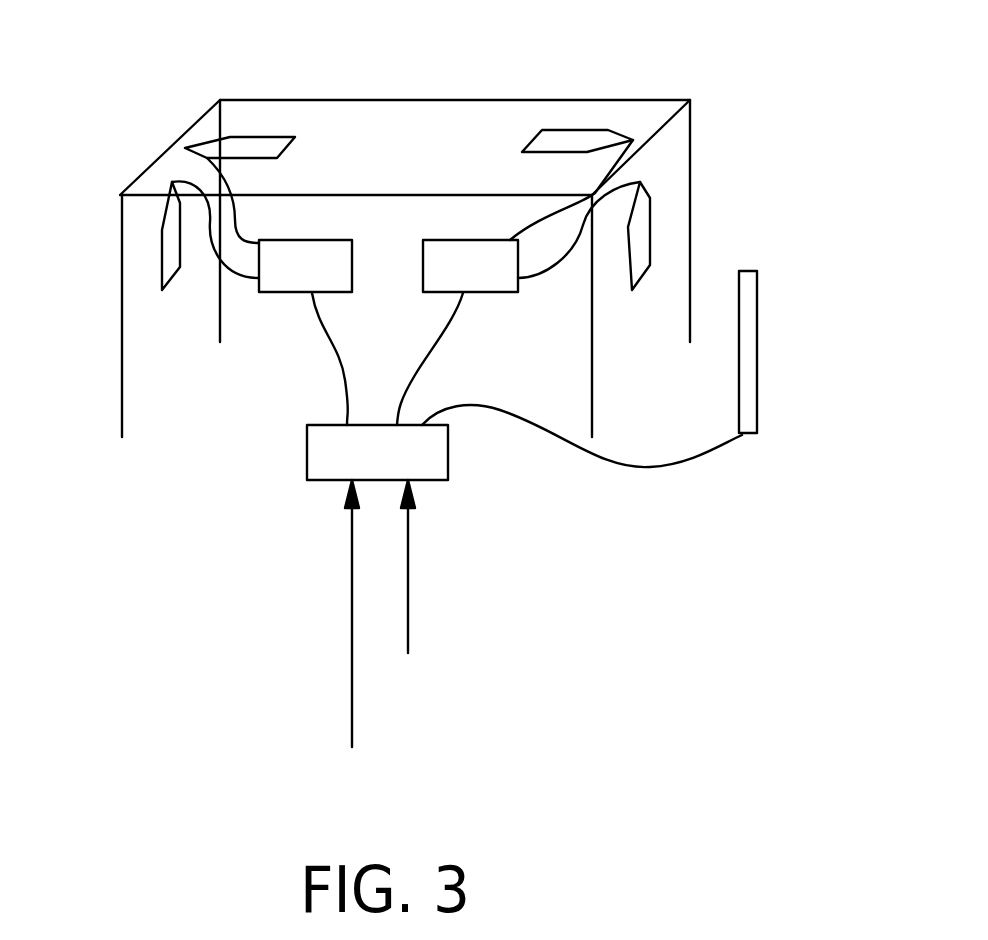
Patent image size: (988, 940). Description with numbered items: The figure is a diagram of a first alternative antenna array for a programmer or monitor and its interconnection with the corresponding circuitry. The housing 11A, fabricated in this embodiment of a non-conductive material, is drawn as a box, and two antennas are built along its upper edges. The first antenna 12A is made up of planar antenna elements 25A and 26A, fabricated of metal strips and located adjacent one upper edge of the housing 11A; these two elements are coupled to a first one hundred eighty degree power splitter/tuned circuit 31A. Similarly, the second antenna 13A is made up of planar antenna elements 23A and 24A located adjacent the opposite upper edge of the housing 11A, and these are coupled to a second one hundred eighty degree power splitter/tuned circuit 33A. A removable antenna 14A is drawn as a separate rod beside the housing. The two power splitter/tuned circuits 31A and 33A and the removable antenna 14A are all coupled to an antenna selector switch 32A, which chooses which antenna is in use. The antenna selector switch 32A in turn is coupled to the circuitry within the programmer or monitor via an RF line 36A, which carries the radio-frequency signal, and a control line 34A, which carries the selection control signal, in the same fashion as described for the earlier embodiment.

The housing 11A is at (398, 113).
The first antenna 12A is at (162, 130).
The second antenna 13A is at (673, 173).
The removable antenna 14A is at (757, 350).
The planar antenna element 23A is at (558, 138).
The planar antenna element 24A is at (643, 237).
The planar antenna element 25A is at (165, 237).
The planar antenna element 26A is at (252, 148).
The 180° power splitter/tuned circuit 31A is at (282, 293).
The antenna selector switch 32A is at (308, 452).
The 180° power splitter/tuned circuit 33A is at (502, 293).
The control line 34A is at (350, 703).
The RF line 36A is at (408, 532).